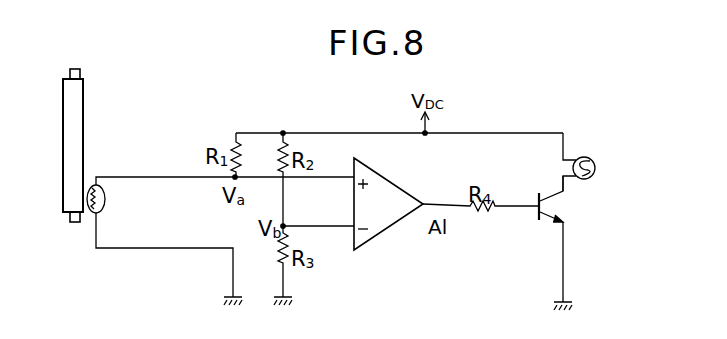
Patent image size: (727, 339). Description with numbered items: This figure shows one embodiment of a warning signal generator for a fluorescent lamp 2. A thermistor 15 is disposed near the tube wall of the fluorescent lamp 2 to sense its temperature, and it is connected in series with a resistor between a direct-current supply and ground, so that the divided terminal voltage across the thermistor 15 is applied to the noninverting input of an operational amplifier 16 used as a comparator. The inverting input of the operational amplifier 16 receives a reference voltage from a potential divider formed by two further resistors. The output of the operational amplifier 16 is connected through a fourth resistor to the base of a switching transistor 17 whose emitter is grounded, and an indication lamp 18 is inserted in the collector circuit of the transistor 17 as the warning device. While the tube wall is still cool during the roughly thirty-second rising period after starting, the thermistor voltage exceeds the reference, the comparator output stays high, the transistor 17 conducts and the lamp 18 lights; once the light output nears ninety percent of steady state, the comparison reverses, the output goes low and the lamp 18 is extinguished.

The fluorescent lamp 2 is at (84, 99).
The thermistor 15 is at (92, 214).
The operational amplifier 16 is at (399, 186).
The switching transistor 17 is at (546, 217).
The indication lamp 18 is at (596, 168).